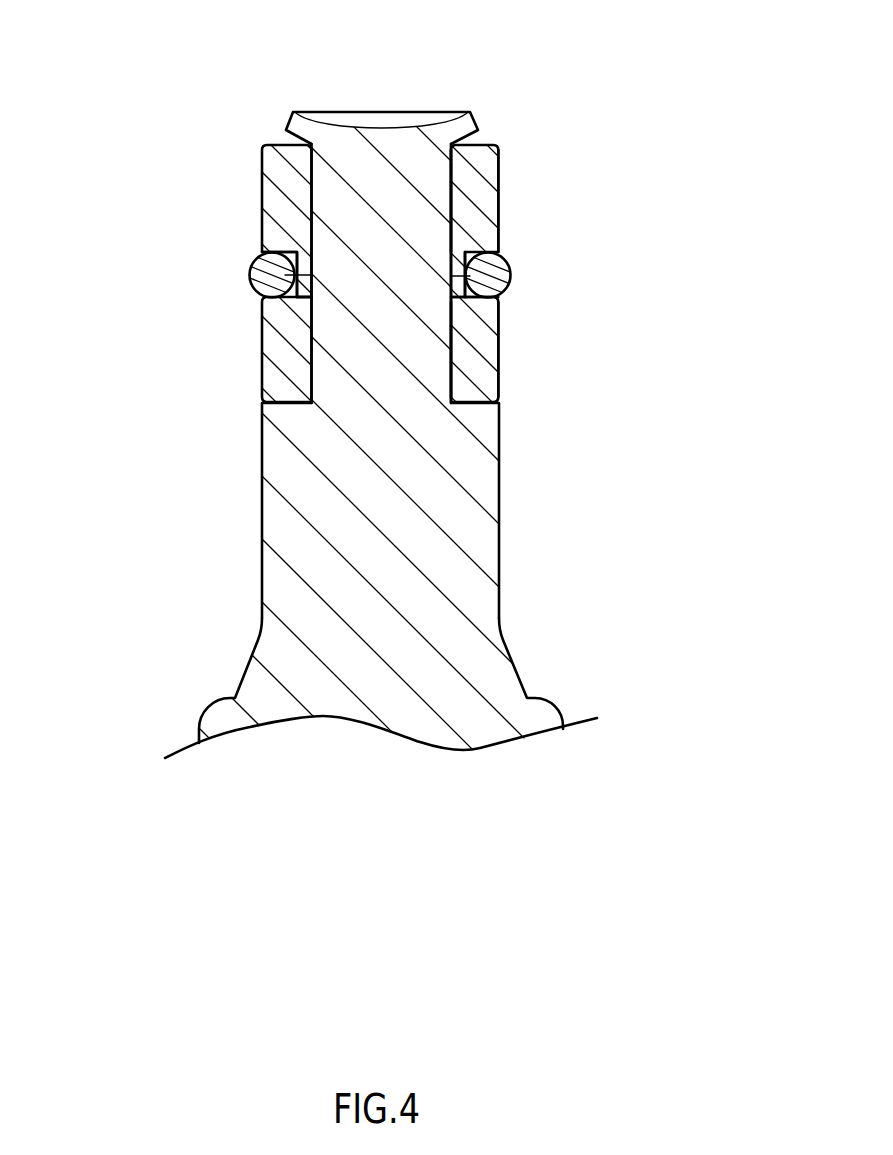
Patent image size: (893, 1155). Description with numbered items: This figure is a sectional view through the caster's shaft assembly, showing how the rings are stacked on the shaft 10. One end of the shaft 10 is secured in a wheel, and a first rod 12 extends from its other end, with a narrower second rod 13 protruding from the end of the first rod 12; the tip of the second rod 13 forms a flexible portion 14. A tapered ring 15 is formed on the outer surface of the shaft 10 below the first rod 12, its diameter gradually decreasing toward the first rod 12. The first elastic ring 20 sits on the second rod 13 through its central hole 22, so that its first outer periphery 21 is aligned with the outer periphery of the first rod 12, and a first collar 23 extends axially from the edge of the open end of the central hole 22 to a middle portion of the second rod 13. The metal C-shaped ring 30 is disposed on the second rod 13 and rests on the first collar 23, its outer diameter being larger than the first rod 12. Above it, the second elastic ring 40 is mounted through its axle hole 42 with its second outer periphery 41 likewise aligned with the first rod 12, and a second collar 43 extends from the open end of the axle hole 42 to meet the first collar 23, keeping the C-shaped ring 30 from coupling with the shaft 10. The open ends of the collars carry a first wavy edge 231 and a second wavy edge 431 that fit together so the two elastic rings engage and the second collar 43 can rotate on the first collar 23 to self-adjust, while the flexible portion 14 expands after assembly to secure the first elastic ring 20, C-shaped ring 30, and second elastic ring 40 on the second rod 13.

The shaft 10 is at (530, 534).
The first rod 12 is at (265, 496).
The second rod 13 is at (388, 182).
The flexible portion 14 is at (317, 127).
The tapered ring 15 is at (517, 670).
The first elastic ring 20 is at (253, 350).
The first outer periphery 21 is at (500, 370).
The central hole 22 is at (452, 352).
The first collar 23 is at (468, 253).
The first wavy edge 231 is at (451, 251).
The C-shaped ring 30 is at (237, 275).
The second elastic ring 40 is at (258, 197).
The second outer periphery 41 is at (503, 172).
The axle hole 42 is at (451, 213).
The second collar 43 is at (253, 257).
The second wavy edge 431 is at (293, 314).